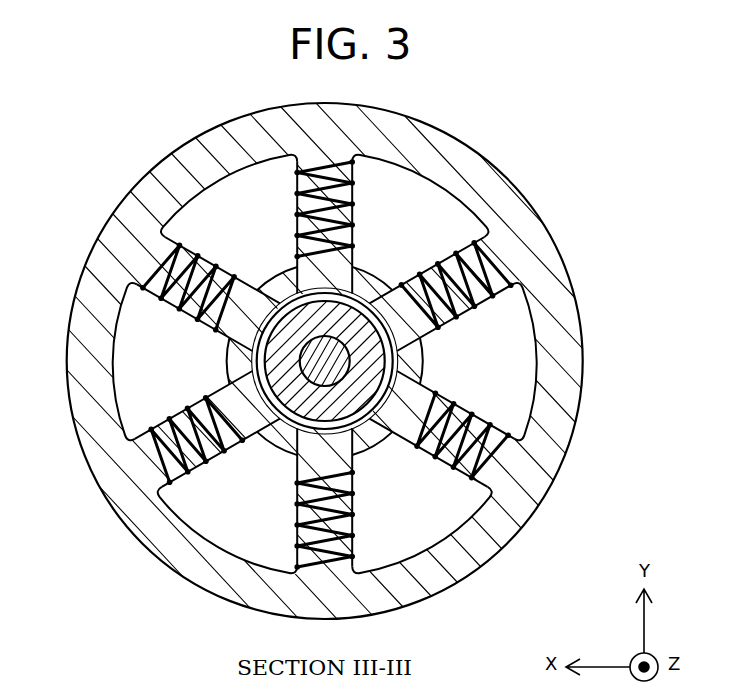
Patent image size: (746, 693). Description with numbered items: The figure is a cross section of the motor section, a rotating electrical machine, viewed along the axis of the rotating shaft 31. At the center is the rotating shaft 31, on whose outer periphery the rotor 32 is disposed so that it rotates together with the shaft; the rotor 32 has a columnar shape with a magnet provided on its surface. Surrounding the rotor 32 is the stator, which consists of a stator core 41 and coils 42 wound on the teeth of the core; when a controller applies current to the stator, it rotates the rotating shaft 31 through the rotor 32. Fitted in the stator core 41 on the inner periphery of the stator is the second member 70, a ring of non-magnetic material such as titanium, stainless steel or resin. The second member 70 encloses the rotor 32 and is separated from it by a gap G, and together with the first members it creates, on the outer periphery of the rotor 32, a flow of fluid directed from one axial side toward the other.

The rotating shaft 31 is at (320, 377).
The rotor 32 is at (293, 323).
The stator core 41 is at (528, 228).
The coils 42 is at (497, 264).
The second member 70 is at (397, 368).
The gap G is at (293, 427).